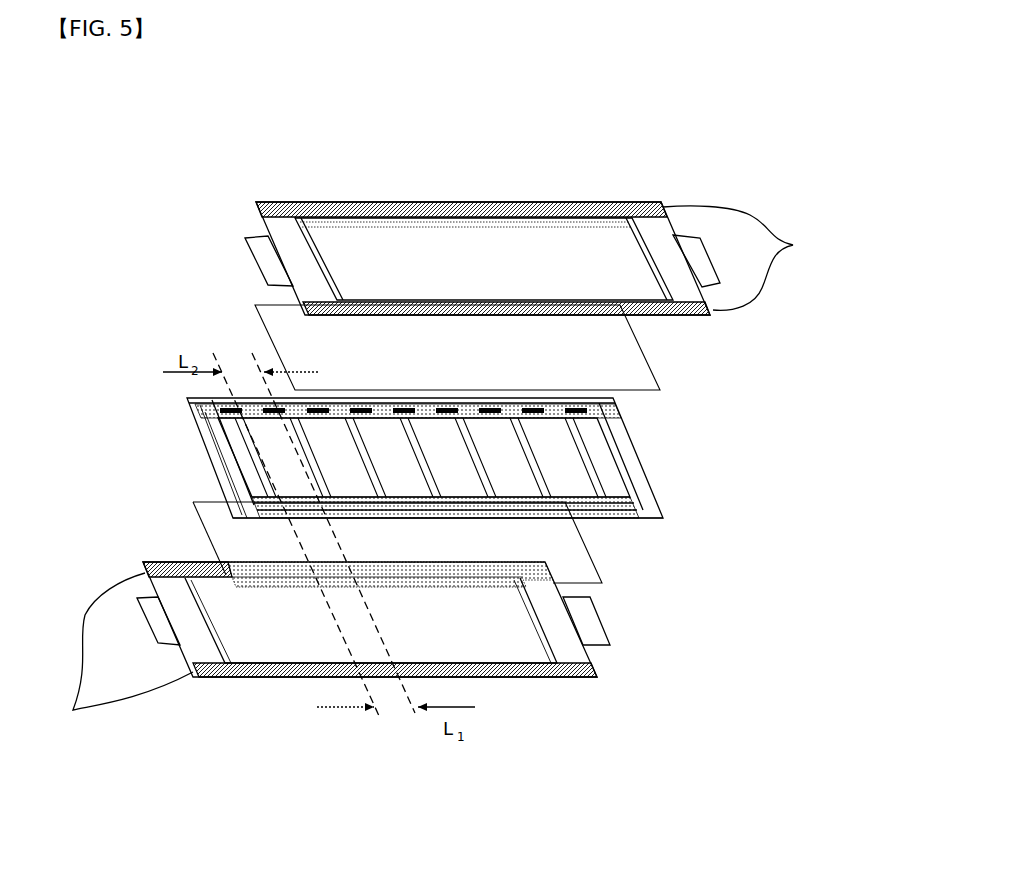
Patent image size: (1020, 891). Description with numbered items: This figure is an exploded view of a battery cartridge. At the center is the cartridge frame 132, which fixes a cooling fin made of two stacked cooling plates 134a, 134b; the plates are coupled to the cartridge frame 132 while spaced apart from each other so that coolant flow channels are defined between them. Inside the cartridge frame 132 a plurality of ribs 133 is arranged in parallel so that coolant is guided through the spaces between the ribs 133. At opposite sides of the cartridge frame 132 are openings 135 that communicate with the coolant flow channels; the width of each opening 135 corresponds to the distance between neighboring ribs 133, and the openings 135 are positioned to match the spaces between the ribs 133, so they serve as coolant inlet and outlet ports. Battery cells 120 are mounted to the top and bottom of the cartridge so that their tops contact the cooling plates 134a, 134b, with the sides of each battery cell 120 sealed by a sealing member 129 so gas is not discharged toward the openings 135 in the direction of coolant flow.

The battery cell 120 is at (658, 179).
The sealing member 129 is at (439, 473).
The cartridge frame 132 is at (660, 493).
The ribs 133 is at (310, 463).
The cooling plate 134a is at (655, 362).
The cooling plate 134b is at (600, 561).
The opening 135 is at (308, 516).